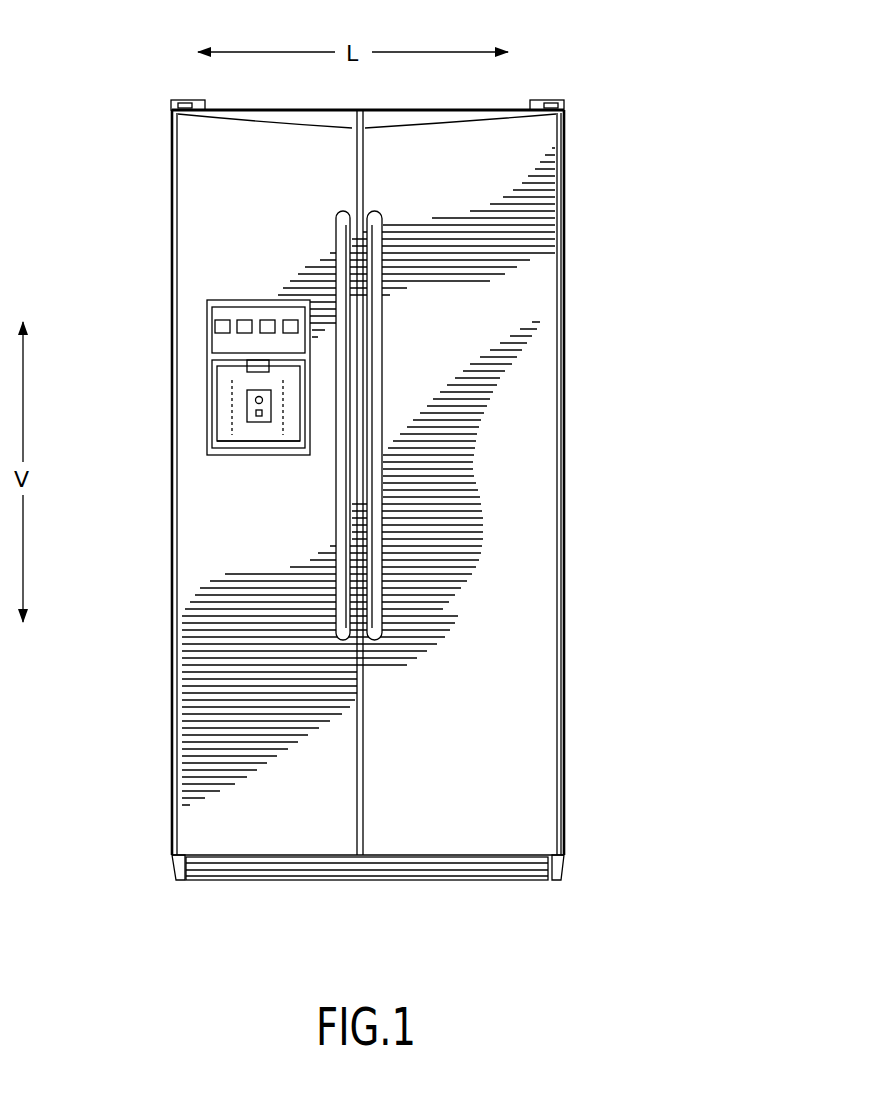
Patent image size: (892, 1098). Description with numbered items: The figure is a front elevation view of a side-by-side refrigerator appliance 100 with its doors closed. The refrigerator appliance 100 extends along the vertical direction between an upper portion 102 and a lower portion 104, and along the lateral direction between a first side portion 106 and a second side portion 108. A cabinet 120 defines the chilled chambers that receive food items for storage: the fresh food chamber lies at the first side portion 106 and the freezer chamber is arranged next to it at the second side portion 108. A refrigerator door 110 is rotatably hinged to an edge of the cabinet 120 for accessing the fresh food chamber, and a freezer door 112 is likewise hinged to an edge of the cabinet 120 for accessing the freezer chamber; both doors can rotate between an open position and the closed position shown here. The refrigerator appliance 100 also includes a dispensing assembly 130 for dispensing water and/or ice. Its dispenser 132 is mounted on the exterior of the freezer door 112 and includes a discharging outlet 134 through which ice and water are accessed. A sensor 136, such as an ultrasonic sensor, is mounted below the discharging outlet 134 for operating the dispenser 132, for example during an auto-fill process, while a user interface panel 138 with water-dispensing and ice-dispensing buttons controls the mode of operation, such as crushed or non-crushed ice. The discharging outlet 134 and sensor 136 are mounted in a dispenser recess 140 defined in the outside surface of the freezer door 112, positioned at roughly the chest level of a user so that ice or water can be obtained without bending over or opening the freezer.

The refrigerator appliance 100 is at (652, 88).
The upper portion 102 is at (170, 102).
The lower portion 104 is at (150, 863).
The first side portion 106 is at (175, 98).
The second side portion 108 is at (566, 98).
The refrigerator door 110 is at (545, 268).
The freezer door 112 is at (215, 208).
The cabinet 120 is at (565, 795).
The dispensing assembly 130 is at (176, 386).
The dispenser 132 is at (216, 370).
The discharging outlet 134 is at (250, 376).
The sensor 136 is at (247, 415).
The user interface panel 138 is at (228, 345).
The dispenser recess 140 is at (255, 442).